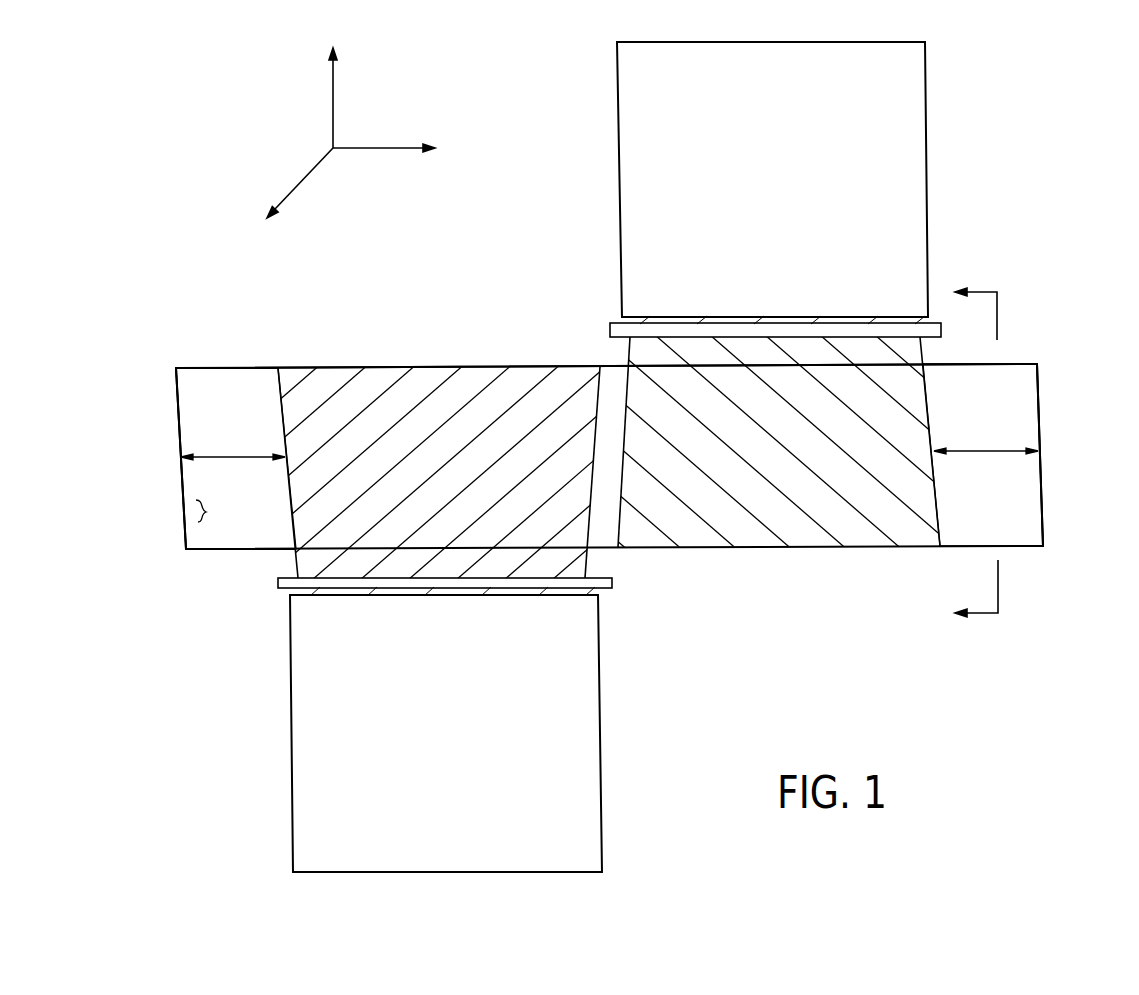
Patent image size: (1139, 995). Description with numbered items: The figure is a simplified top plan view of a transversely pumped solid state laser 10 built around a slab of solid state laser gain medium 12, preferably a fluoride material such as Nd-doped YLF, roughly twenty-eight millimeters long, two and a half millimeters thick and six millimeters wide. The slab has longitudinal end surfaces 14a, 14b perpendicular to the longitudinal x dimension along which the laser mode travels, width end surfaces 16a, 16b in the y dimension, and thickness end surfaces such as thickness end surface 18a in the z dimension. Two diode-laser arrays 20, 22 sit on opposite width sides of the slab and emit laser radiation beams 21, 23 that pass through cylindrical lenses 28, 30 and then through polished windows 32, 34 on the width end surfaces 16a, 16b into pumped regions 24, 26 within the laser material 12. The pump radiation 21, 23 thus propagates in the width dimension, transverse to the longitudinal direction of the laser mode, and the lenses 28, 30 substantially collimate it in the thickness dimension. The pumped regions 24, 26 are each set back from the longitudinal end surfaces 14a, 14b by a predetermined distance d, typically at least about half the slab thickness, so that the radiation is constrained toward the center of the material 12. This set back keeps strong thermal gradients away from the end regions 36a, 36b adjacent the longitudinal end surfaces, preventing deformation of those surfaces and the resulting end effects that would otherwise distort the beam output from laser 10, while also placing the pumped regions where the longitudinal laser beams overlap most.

The transversely pumped solid state laser 10 is at (148, 51).
The slab of solid state laser gain medium 12 is at (200, 355).
The longitudinal end surface 14a is at (180, 433).
The longitudinal end surface 14b is at (1043, 493).
The width end surface 16a is at (215, 552).
The width end surface 16b is at (252, 367).
The thickness end surface 18a is at (183, 513).
The diode-laser array 20 is at (421, 721).
The laser radiation beam 21 is at (293, 527).
The diode-laser array 22 is at (746, 166).
The laser radiation beam 23 is at (930, 407).
The pumped region 24 is at (413, 465).
The pumped region 26 is at (760, 463).
The cylindrical lens 28 is at (603, 588).
The cylindrical lens 30 is at (610, 330).
The polished window 32 is at (570, 550).
The polished window 34 is at (650, 366).
The end region 36a is at (275, 513).
The end region 36b is at (968, 517).